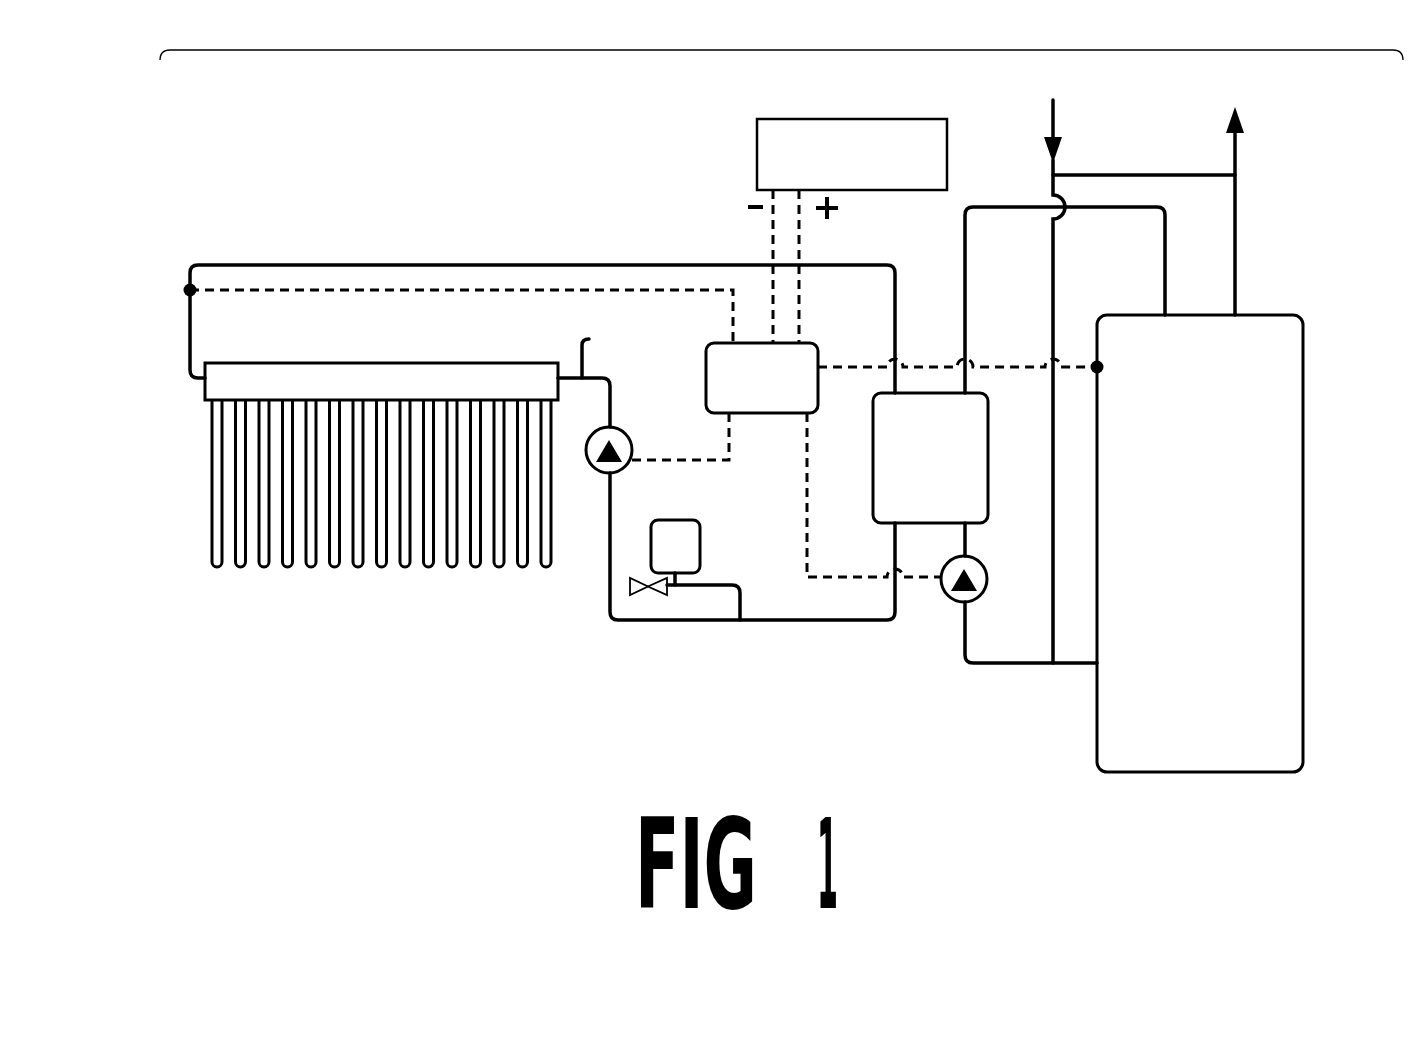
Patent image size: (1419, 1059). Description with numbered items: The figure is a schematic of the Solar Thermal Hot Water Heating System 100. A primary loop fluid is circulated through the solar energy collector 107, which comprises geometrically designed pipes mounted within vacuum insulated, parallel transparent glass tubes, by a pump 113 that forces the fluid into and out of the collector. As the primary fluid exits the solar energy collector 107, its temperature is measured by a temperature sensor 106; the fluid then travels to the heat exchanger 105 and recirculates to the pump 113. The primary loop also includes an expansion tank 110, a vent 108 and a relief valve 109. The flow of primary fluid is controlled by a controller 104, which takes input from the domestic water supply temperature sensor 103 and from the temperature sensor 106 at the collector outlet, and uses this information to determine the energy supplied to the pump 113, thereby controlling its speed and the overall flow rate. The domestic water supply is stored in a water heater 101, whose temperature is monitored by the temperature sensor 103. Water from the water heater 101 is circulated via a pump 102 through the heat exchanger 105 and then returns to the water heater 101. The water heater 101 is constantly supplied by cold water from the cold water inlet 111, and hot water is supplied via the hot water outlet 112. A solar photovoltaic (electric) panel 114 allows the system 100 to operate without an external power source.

The Solar Thermal Hot Water Heating System 100 is at (781, 34).
The water heater 101 is at (1122, 733).
The pump 102 is at (948, 596).
The temperature sensor 103 is at (1102, 366).
The controller 104 is at (772, 357).
The heat exchanger 105 is at (932, 410).
The temperature sensor 106 is at (192, 283).
The solar energy collector 107 is at (403, 362).
The vent 108 is at (580, 335).
The relief valve 109 is at (655, 594).
The expansion tank 110 is at (670, 548).
The cold water inlet 111 is at (1051, 126).
The hot water outlet 112 is at (1288, 93).
The pump 113 is at (585, 445).
The solar photovoltaic panel 114 is at (790, 147).